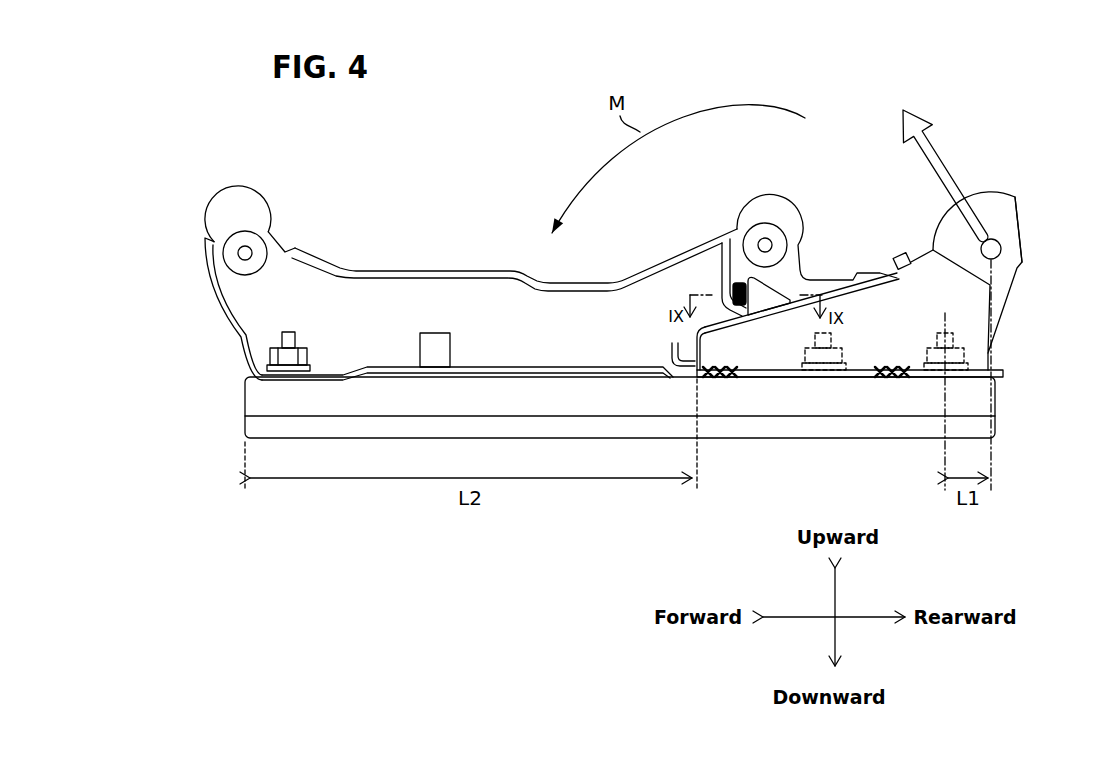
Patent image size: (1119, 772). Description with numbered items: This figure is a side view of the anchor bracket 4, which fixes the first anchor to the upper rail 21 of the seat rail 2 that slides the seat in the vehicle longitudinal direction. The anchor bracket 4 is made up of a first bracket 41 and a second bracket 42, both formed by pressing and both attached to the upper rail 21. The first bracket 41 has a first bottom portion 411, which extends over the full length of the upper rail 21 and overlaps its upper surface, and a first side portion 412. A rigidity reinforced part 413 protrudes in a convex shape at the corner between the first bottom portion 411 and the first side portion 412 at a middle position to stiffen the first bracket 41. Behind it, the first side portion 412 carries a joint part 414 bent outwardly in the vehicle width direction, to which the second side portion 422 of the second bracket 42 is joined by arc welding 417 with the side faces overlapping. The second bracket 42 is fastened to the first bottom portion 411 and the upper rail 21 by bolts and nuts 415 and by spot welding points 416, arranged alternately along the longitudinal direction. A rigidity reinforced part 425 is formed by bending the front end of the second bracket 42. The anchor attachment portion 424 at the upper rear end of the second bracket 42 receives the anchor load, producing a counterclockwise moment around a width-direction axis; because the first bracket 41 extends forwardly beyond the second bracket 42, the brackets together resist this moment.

The seat rail 2 is at (212, 386).
The upper rail 21 is at (245, 410).
The anchor bracket 4 is at (1038, 190).
The first bracket 41 is at (223, 230).
The first bottom portion 411 is at (378, 365).
The first side portion 412 is at (345, 268).
The rigidity reinforced part 413 is at (433, 333).
The joint part 414 is at (777, 213).
The bolts and nuts 415 is at (282, 343).
The welding points 416 is at (727, 378).
The arc welding 417 is at (730, 295).
The second bracket 42 is at (1005, 308).
The second side portion 422 is at (770, 288).
The anchor attachment portion 424 is at (1012, 222).
The rigidity reinforced part 425 is at (671, 355).